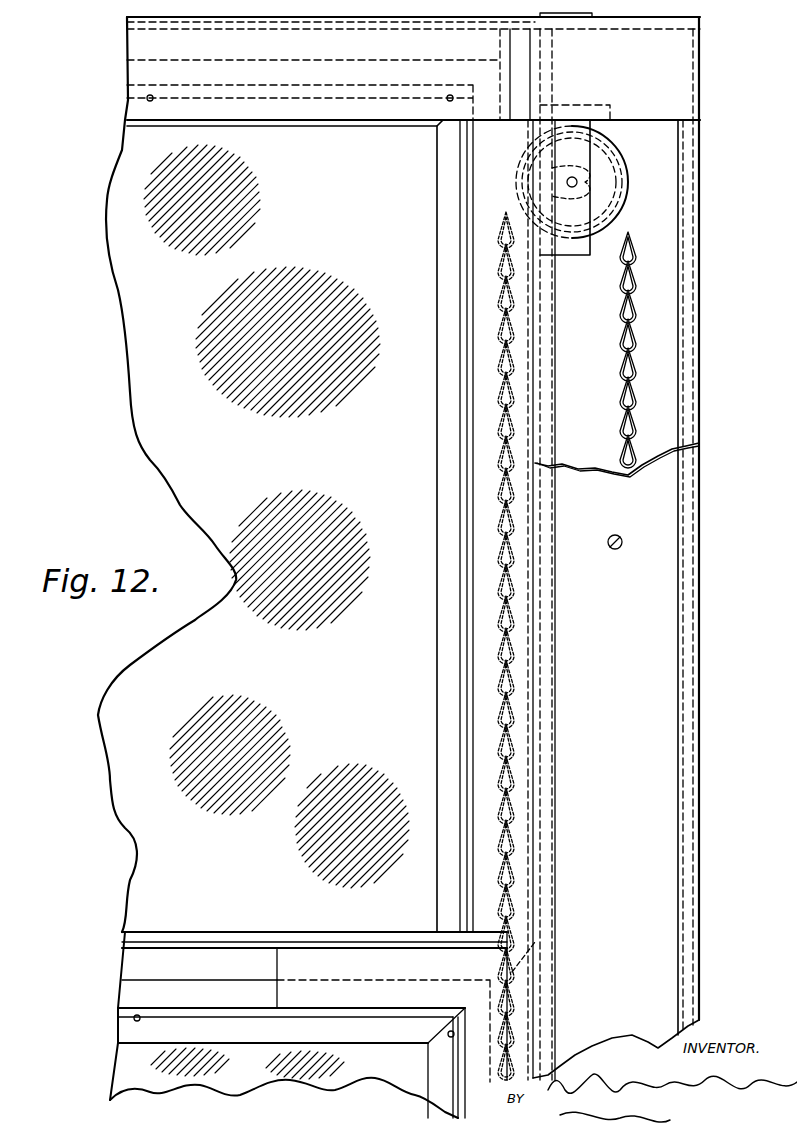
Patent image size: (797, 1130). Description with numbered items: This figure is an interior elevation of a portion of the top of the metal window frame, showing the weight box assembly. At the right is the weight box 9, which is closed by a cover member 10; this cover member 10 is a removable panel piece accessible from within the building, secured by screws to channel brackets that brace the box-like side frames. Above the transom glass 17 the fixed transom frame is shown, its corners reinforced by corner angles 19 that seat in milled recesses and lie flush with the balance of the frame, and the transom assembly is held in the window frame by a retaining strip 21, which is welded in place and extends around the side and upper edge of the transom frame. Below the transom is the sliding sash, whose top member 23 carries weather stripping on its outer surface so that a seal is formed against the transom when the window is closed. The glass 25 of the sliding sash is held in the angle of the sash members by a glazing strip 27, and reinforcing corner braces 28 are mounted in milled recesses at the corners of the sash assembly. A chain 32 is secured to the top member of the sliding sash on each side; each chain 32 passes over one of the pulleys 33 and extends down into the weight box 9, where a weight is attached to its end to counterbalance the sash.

The weight box 9 is at (668, 420).
The cover member 10 is at (640, 553).
The glass 17 is at (148, 380).
The reinforcing corner angles 19 is at (312, 75).
The retaining strip 21 is at (462, 613).
The top member 23 is at (140, 990).
The glass 25 is at (267, 1063).
The glazing strip 27 is at (440, 1077).
The reinforcing corner braces 28 is at (348, 995).
The chain 32 is at (637, 350).
The pulleys 33 is at (630, 150).